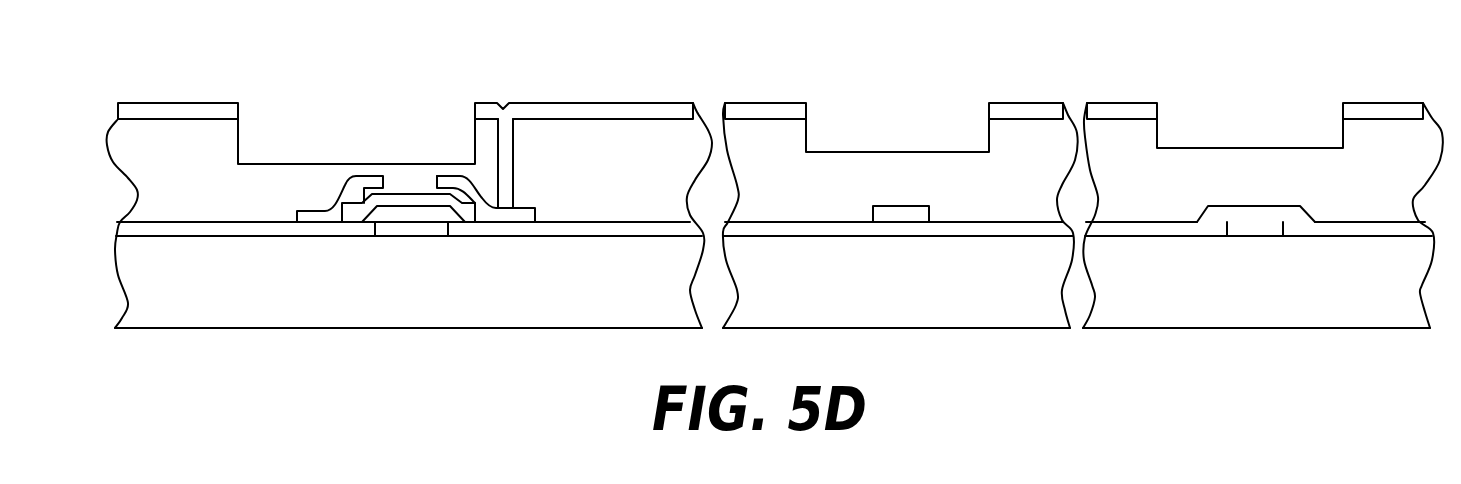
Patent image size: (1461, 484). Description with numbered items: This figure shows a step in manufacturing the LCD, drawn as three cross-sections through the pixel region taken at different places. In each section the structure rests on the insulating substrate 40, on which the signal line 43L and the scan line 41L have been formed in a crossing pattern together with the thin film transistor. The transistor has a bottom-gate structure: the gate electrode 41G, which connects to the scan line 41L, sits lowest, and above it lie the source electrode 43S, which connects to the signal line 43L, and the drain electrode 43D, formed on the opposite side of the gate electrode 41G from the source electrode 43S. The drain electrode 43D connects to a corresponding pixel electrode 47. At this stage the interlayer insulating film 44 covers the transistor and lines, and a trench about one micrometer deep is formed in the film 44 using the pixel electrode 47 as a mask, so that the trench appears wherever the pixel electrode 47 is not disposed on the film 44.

The insulating substrate 40 is at (670, 313).
The interlayer insulating film 44 is at (657, 130).
The pixel electrode 47 is at (568, 108).
The gate electrode 41G is at (409, 232).
The scan line 41L is at (1257, 230).
The source electrode 43S is at (360, 188).
The signal line 43L is at (321, 218).
The drain electrode 43D is at (490, 216).